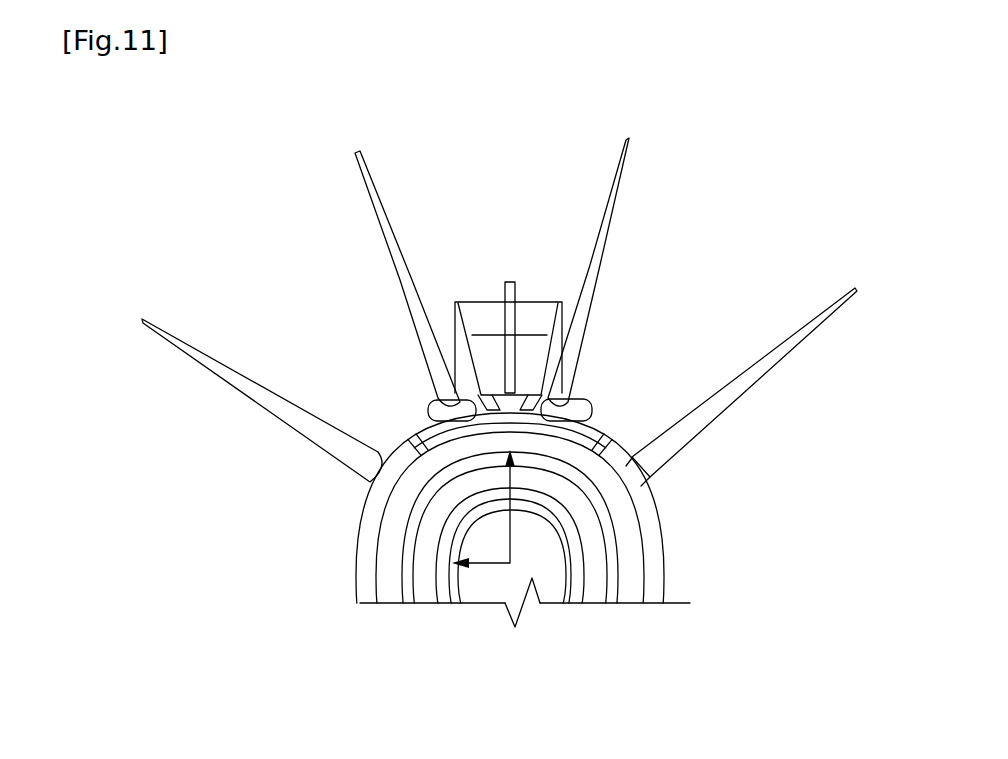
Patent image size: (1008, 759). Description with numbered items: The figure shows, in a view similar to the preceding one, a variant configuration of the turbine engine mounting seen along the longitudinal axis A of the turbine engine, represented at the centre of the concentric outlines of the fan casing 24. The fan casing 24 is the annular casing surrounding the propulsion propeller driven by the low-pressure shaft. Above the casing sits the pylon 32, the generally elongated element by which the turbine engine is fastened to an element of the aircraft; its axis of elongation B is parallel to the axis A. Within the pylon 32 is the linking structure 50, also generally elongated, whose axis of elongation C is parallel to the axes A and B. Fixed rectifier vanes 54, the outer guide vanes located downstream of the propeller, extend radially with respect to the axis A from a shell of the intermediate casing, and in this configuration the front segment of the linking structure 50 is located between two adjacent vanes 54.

The fan casing 24 is at (655, 584).
The pylon 32 is at (537, 312).
The linking structure 50 is at (500, 403).
The rectifier vanes 54 is at (380, 187).
The axis A is at (510, 565).
The axis of elongation B is at (510, 348).
The axis of elongation C is at (513, 400).